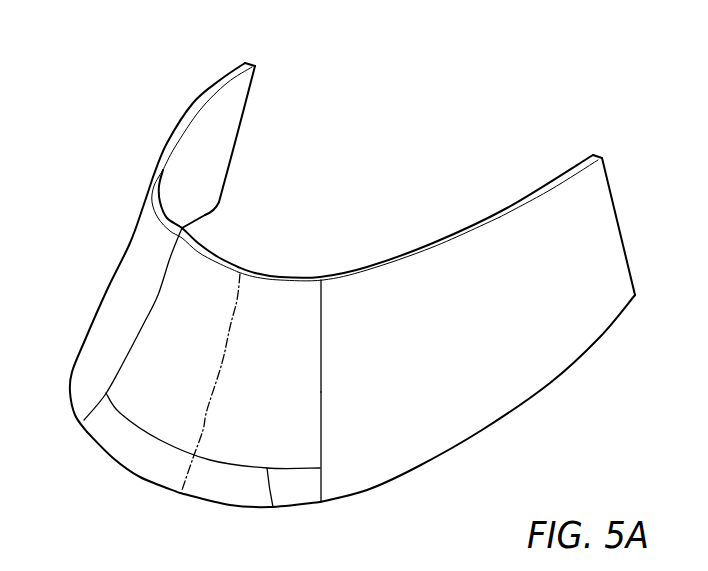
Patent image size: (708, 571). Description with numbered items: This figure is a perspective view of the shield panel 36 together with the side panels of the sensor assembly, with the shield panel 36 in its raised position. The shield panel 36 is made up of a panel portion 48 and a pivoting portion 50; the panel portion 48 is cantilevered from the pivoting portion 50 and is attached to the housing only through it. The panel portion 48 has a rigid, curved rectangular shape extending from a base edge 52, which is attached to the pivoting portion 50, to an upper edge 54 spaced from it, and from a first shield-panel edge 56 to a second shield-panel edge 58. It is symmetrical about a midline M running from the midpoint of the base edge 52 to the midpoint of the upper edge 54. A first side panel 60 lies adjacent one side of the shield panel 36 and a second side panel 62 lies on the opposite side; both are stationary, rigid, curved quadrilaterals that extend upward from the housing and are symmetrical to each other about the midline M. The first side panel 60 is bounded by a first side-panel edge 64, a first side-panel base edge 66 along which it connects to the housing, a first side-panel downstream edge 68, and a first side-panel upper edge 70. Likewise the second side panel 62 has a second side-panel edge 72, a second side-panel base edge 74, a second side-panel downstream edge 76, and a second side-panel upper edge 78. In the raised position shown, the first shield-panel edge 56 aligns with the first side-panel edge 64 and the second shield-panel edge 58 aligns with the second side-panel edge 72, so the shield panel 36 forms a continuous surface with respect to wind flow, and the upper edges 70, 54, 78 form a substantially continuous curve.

The shield panel 36 is at (138, 407).
The panel portion 48 is at (187, 415).
The pivoting portion 50 is at (230, 487).
The base edge 52 is at (273, 508).
The upper edge 54 is at (225, 259).
The first shield-panel edge 56 is at (323, 395).
The second shield-panel edge 58 is at (140, 323).
The first side panel 60 is at (590, 250).
The second side panel 62 is at (233, 97).
The first side-panel edge 64 is at (320, 367).
The first side-panel base edge 66 is at (482, 430).
The first side-panel downstream edge 68 is at (610, 192).
The first side-panel upper edge 70 is at (507, 208).
The second side-panel edge 72 is at (157, 297).
The second side-panel base edge 74 is at (206, 215).
The second side-panel downstream edge 76 is at (242, 142).
The second side-panel upper edge 78 is at (195, 102).
The midline M is at (222, 363).